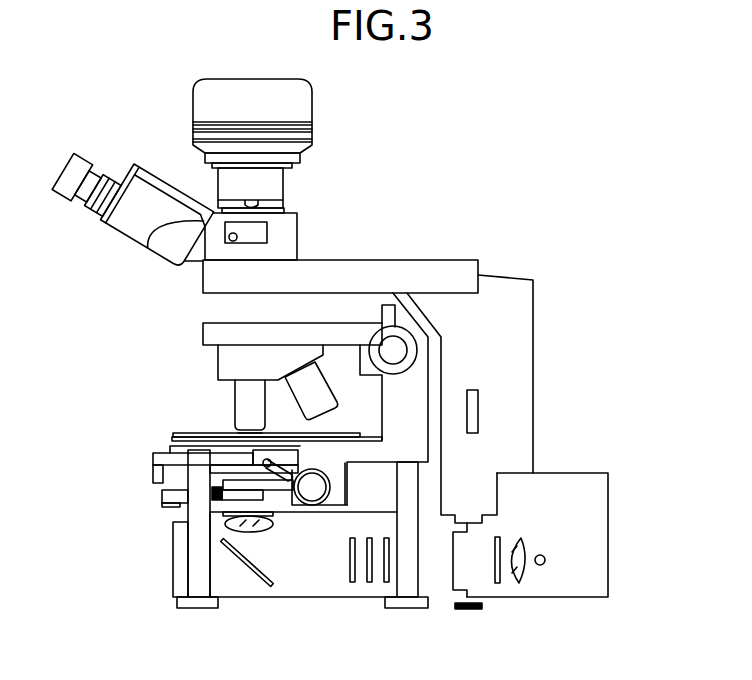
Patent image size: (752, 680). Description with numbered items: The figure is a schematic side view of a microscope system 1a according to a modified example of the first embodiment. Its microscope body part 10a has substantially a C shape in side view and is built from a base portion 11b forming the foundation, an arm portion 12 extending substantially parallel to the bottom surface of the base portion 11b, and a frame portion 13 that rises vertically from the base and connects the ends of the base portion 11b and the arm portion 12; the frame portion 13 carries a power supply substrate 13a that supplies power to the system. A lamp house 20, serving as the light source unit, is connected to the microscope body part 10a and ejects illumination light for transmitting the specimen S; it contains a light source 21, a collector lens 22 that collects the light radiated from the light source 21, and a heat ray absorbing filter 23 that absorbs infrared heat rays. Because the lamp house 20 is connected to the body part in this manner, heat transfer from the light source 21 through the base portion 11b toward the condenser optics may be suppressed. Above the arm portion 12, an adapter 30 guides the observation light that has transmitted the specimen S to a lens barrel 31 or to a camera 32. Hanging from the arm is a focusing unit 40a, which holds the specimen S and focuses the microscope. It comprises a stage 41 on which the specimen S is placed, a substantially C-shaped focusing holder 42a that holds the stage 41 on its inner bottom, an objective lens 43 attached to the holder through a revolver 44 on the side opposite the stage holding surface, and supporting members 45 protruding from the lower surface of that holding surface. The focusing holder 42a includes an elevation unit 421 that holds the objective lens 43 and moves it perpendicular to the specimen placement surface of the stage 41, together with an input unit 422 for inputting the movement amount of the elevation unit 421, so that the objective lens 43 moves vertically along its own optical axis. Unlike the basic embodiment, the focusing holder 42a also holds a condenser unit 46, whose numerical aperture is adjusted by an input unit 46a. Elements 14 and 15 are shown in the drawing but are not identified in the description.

The microscope system 1a is at (432, 128).
The microscope body part 10a is at (494, 366).
The base portion 11b is at (303, 594).
The arm portion 12 is at (392, 266).
The frame portion 13 is at (517, 446).
The power supply substrate 13a is at (480, 410).
The filters 14 is at (386, 583).
The mirror 15 is at (250, 576).
The lamp house 20 is at (607, 490).
The light source 21 is at (540, 555).
The collector lens 22 is at (514, 575).
The heat ray absorbing filter 23 is at (508, 579).
The adapter 30 is at (290, 233).
The lens barrel 31 is at (139, 165).
The camera 32 is at (302, 105).
The focusing unit 40a is at (223, 371).
The stage 41 is at (173, 438).
The focusing holder 42a is at (420, 378).
The elevation unit 421 is at (215, 332).
The input unit 422 is at (418, 348).
The objective lens 43 is at (240, 393).
The revolver 44 is at (228, 362).
The supporting members 45 is at (192, 557).
The condenser unit 46 is at (230, 521).
The input unit 46a is at (330, 486).
The specimen S is at (232, 432).